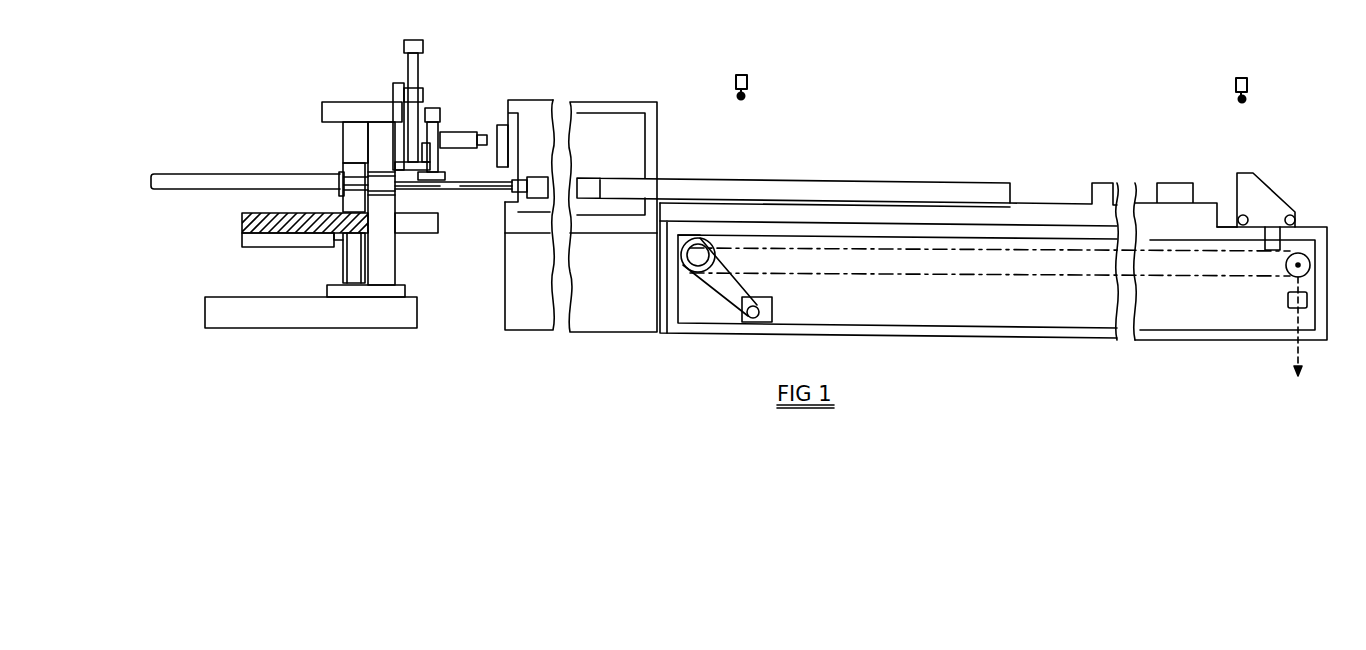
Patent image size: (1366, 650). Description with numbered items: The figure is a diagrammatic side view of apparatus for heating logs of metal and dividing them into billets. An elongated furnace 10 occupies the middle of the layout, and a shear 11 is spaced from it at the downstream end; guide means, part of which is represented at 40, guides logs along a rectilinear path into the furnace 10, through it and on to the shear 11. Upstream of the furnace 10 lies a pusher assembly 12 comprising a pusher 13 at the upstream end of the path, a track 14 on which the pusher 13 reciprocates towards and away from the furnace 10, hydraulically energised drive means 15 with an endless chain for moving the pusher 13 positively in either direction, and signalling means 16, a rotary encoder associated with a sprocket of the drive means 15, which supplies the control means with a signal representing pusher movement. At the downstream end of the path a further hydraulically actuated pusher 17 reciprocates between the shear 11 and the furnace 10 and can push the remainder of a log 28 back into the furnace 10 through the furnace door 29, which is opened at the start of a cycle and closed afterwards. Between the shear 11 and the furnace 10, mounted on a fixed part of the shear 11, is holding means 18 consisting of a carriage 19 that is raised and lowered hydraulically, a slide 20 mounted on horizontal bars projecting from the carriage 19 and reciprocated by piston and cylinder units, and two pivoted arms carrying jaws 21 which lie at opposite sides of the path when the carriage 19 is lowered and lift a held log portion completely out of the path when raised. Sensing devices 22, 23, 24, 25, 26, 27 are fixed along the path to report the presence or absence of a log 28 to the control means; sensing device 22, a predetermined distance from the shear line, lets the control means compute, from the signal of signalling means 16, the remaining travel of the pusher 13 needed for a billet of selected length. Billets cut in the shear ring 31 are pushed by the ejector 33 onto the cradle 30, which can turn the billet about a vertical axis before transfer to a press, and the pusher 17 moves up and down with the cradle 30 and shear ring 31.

The furnace 10 is at (543, 98).
The shear 11 is at (358, 101).
The pusher assembly 12 is at (1035, 345).
The pusher 13 is at (1248, 202).
The track 14 is at (1318, 227).
The drive means 15 is at (673, 262).
The signalling means 16 is at (1307, 301).
The further pusher 17 is at (259, 174).
The holding means 18 is at (462, 65).
The carriage 19 is at (412, 118).
The slide 20 is at (442, 134).
The jaws 21 is at (445, 180).
The sensing device 22 is at (408, 198).
The sensing device 23 is at (482, 200).
The sensing device 24 is at (532, 181).
The sensing device 25 is at (883, 169).
The sensing device 26 is at (1063, 188).
The sensing device 27 is at (1221, 195).
The log 28 is at (547, 215).
The door 29 is at (498, 128).
The cradle 30 is at (272, 242).
The shear ring 31 is at (351, 242).
The ejector 33 is at (414, 228).
The guide means 40 is at (778, 205).